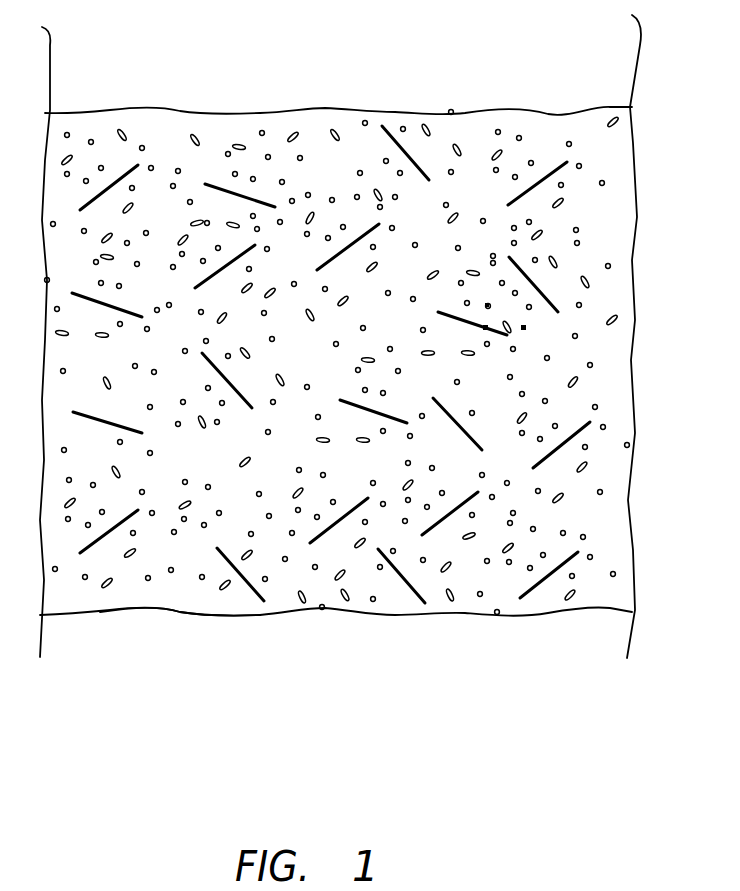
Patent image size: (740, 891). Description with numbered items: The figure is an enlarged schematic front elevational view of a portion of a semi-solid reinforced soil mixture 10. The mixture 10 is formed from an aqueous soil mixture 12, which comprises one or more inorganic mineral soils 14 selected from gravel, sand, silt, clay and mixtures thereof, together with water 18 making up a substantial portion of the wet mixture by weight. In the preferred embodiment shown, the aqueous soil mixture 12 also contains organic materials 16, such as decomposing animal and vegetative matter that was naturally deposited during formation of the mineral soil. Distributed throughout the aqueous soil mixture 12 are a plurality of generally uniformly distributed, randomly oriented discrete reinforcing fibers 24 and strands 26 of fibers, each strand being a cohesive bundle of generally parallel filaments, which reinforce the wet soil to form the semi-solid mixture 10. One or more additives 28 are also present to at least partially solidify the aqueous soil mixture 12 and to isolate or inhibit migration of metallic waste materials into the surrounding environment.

The semi-solid reinforced soil mixture 10 is at (524, 705).
The aqueous soil mixture 12 is at (552, 133).
The inorganic mineral soil 14 is at (233, 139).
The organic materials 16 is at (67, 135).
The water 18 is at (195, 597).
The reinforcing fibers 24 is at (422, 535).
The strands of fibers 26 is at (107, 537).
The additives 28 is at (403, 127).